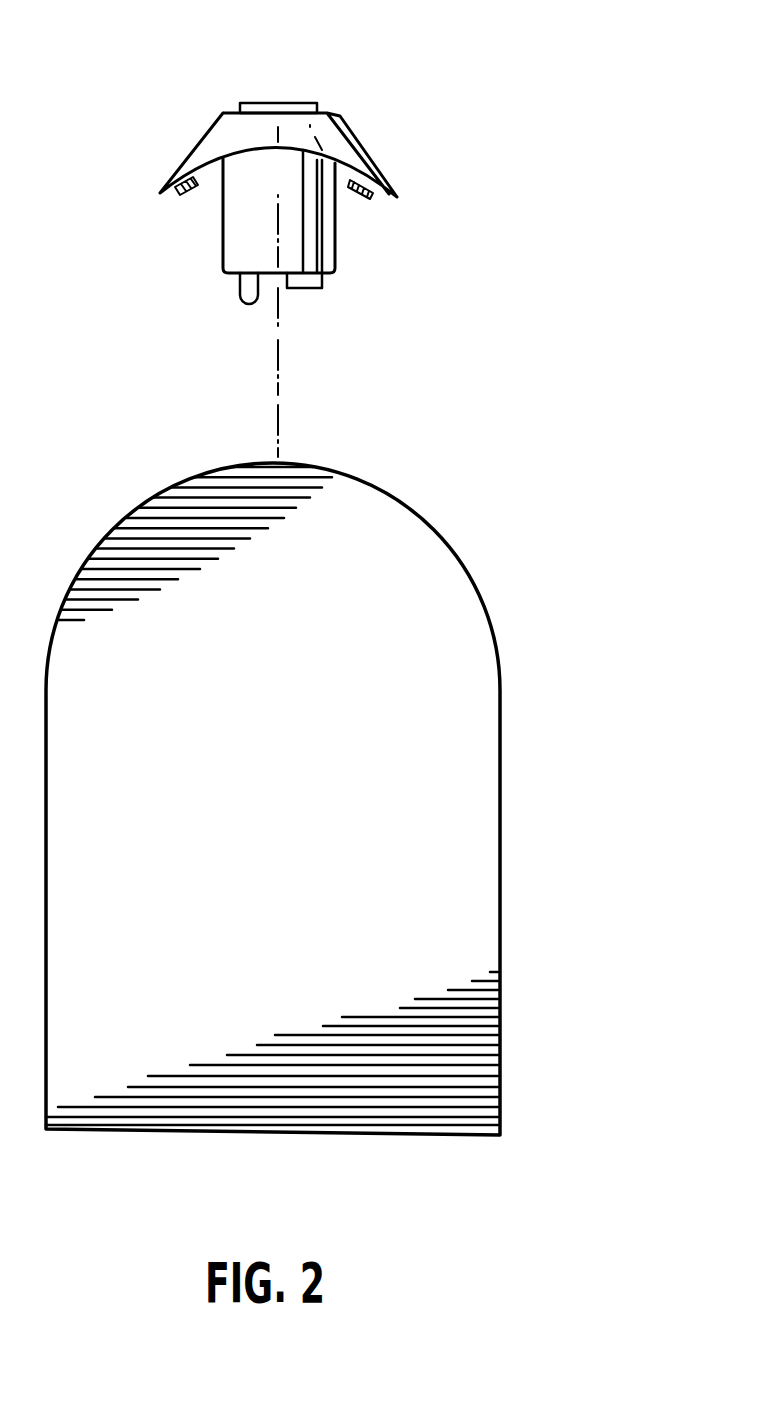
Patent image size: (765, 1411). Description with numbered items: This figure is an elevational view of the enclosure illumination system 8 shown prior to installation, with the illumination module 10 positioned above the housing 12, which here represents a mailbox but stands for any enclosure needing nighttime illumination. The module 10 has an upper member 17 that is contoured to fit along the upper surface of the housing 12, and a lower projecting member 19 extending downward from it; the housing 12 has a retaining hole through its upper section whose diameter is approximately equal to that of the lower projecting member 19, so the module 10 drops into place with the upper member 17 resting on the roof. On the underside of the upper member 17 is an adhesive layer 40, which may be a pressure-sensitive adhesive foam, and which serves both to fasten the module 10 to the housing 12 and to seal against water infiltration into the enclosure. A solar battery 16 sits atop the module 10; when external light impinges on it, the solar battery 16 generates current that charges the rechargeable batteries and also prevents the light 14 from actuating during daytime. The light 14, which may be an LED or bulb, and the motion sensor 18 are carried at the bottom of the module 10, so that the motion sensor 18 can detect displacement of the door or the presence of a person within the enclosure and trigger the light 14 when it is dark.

The enclosure illumination system 8 is at (345, 791).
The illumination module 10 is at (300, 234).
The housing 12 is at (497, 620).
The light 14 is at (247, 303).
The solar battery 16 is at (296, 104).
The upper member 17 is at (189, 151).
The motion sensor 18 is at (327, 282).
The lower projecting member 19 is at (336, 231).
The adhesive layer 40 is at (187, 197).